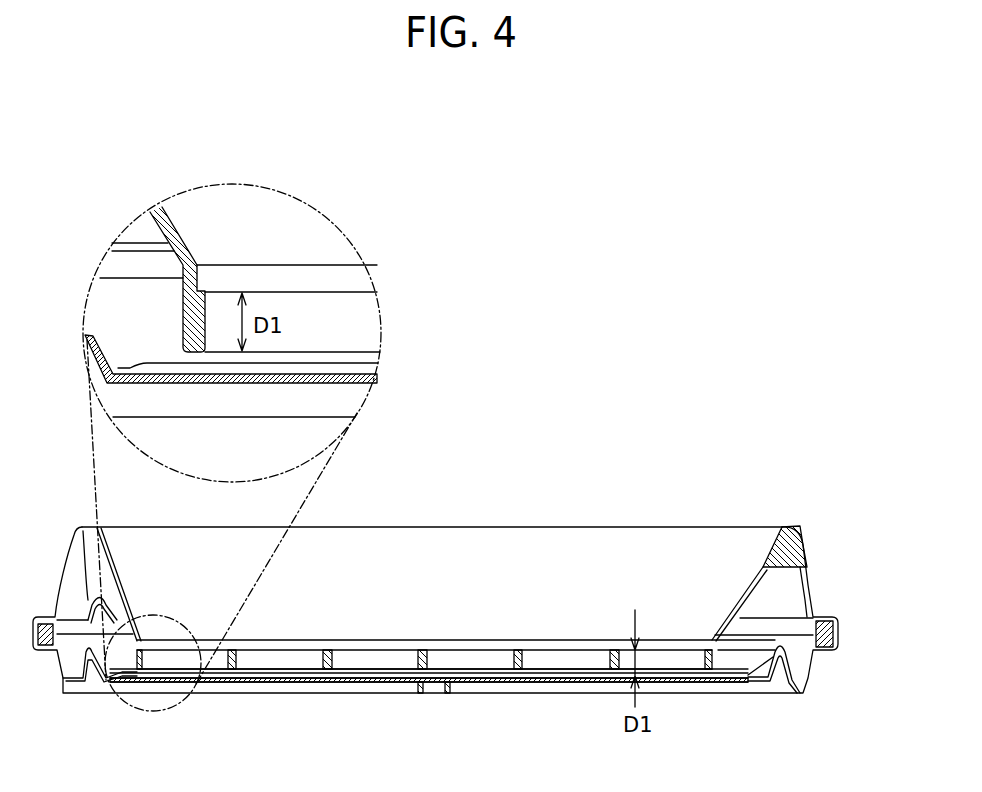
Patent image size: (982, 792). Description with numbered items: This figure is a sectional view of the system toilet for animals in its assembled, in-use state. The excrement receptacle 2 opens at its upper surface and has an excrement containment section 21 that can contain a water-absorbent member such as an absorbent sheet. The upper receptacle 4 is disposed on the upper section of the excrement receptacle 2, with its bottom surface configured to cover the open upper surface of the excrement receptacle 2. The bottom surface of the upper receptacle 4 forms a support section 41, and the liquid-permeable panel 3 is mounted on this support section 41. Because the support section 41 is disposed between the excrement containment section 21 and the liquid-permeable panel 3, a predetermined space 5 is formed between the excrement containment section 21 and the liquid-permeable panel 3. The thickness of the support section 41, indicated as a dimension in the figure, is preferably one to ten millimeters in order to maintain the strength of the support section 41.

The excrement receptacle 2 is at (100, 697).
The liquid-permeable panel 3 is at (292, 278).
The upper receptacle 4 is at (623, 502).
The predetermined space 5 is at (310, 340).
The excrement containment section 21 is at (325, 372).
The support section 41 is at (611, 657).